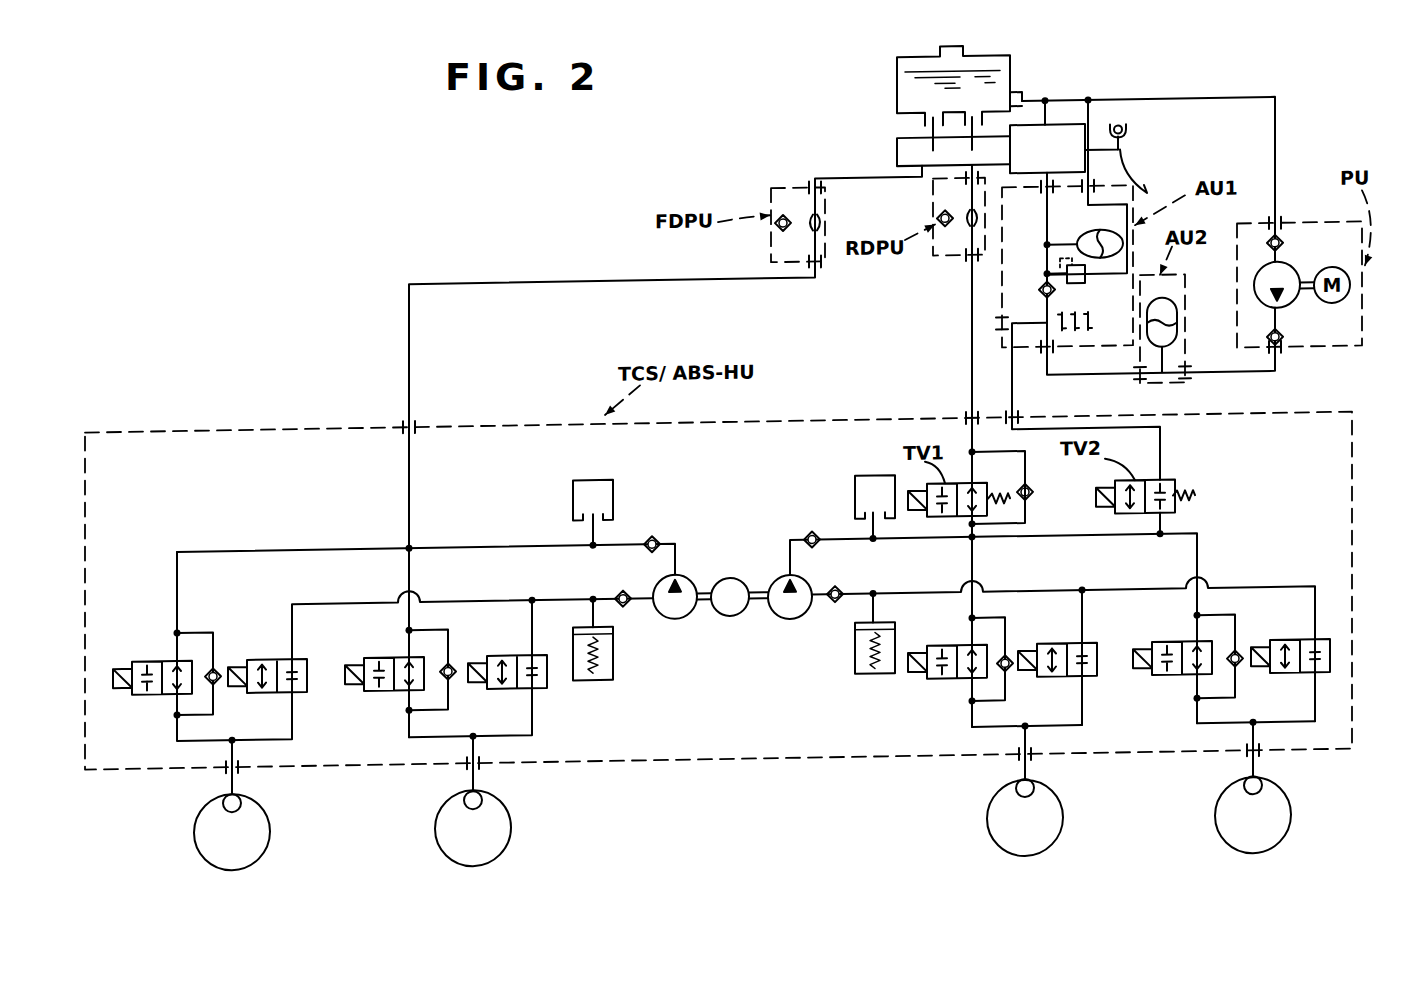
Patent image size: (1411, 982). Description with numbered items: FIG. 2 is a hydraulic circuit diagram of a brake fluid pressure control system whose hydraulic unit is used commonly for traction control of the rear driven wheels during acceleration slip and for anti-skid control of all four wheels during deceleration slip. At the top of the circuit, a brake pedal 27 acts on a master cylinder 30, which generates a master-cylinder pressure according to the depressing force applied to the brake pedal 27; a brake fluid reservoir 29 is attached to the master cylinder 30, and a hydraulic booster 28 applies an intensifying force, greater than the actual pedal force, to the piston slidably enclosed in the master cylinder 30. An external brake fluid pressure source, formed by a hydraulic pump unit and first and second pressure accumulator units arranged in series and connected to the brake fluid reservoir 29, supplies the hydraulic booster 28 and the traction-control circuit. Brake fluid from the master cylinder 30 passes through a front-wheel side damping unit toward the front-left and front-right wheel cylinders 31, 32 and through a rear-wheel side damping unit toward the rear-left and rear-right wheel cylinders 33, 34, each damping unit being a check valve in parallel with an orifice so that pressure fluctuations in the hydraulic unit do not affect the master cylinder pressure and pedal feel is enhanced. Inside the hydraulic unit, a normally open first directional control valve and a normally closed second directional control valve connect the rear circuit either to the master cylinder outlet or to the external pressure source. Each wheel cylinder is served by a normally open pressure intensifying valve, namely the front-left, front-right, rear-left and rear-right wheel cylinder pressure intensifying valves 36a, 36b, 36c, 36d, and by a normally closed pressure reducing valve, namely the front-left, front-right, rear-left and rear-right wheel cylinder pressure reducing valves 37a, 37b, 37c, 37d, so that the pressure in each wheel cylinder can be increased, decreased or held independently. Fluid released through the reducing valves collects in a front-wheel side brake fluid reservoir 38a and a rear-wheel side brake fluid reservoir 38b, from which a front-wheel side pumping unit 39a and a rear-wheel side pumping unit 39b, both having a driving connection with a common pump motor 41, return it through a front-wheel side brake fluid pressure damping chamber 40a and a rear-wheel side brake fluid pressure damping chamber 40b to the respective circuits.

The brake pedal 27 is at (1135, 189).
The hydraulic booster 28 is at (1060, 151).
The brake fluid reservoir 29 is at (895, 107).
The master cylinder 30 is at (897, 165).
The front-left wheel cylinder 31 is at (482, 804).
The front-right wheel cylinder 32 is at (241, 807).
The rear-left wheel cylinder 33 is at (1262, 804).
The rear-right wheel cylinder 34 is at (1034, 802).
The front-left wheel cylinder pressure intensifying valve 36a is at (385, 700).
The front-right wheel cylinder pressure intensifying valve 36b is at (148, 695).
The rear-left wheel cylinder pressure intensifying valve 36c is at (947, 695).
The rear-right wheel cylinder pressure intensifying valve 36d is at (1173, 692).
The front-left wheel cylinder pressure reducing valve 37a is at (548, 697).
The front-right wheel cylinder pressure reducing valve 37b is at (302, 697).
The rear-left wheel cylinder pressure reducing valve 37c is at (1070, 693).
The rear-right wheel cylinder pressure reducing valve 37d is at (1288, 694).
The front-wheel side brake fluid reservoir 38a is at (613, 690).
The rear-wheel side brake fluid reservoir 38b is at (852, 672).
The front-wheel side pumping unit 39a is at (666, 633).
The rear-wheel side pumping unit 39b is at (790, 632).
The front-wheel side brake fluid pressure damping chamber 40a is at (615, 500).
The rear-wheel side brake fluid pressure damping chamber 40b is at (855, 504).
The pump motor 41 is at (728, 588).